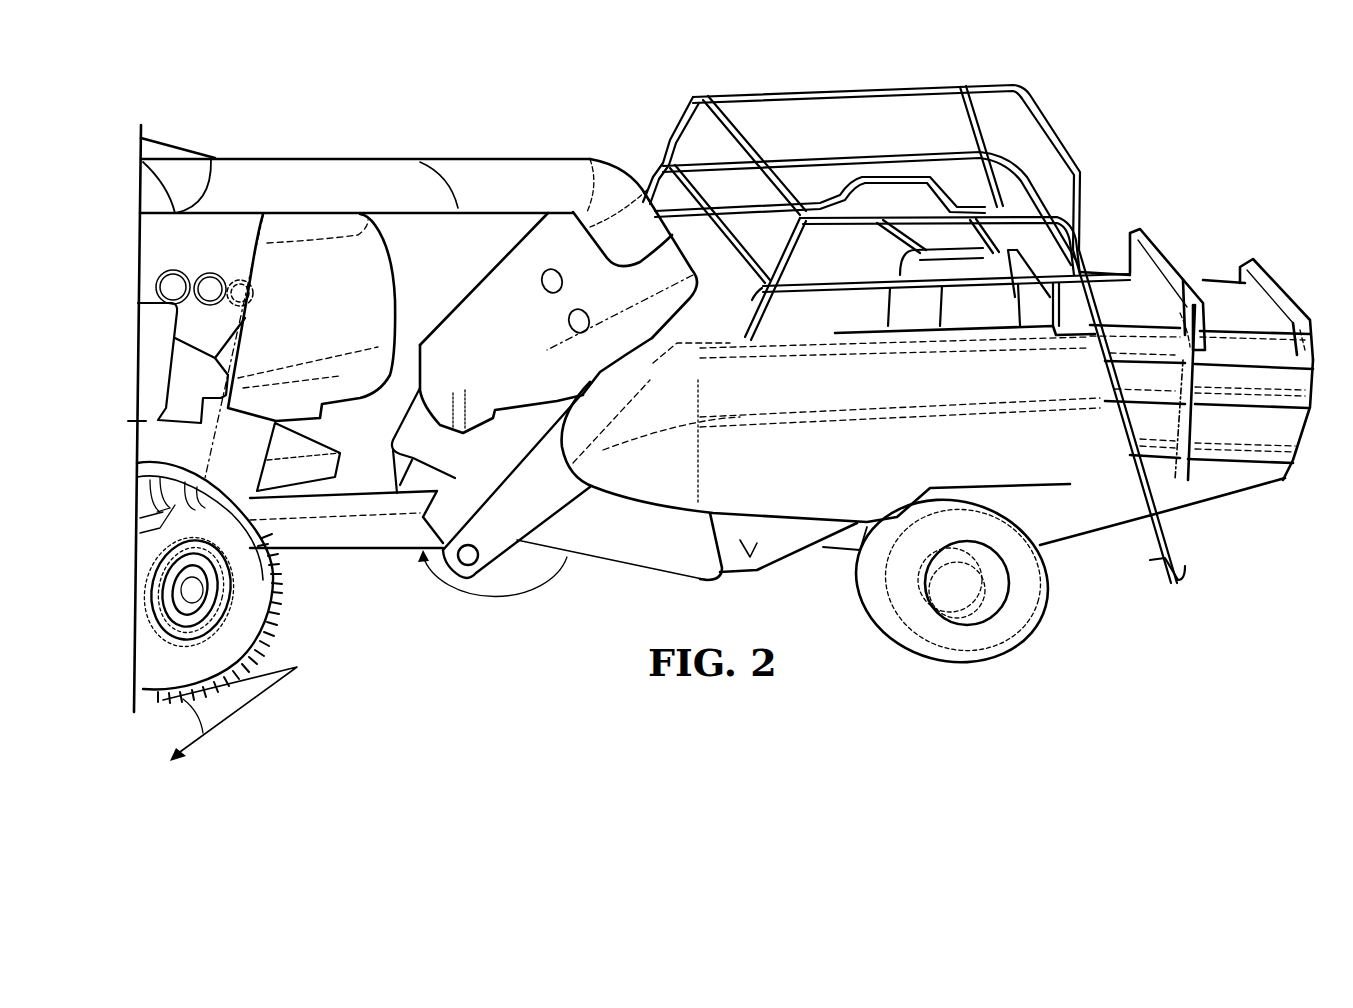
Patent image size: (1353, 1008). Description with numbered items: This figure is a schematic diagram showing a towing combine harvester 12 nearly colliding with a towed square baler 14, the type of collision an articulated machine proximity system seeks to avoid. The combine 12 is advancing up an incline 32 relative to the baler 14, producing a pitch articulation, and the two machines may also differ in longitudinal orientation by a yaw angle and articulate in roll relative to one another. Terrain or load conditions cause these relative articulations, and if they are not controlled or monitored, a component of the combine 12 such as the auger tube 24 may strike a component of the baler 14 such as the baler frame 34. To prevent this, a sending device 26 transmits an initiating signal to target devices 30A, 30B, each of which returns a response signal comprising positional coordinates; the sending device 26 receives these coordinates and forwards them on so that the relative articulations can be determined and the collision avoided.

The combine harvester 12 is at (299, 141).
The square baler 14 is at (1104, 146).
The auger tube 24 is at (481, 158).
The sending device 26 is at (402, 306).
The baler frame 34 is at (500, 278).
The target device 30A is at (537, 293).
The target device 30B is at (565, 328).
The incline 32 is at (250, 672).